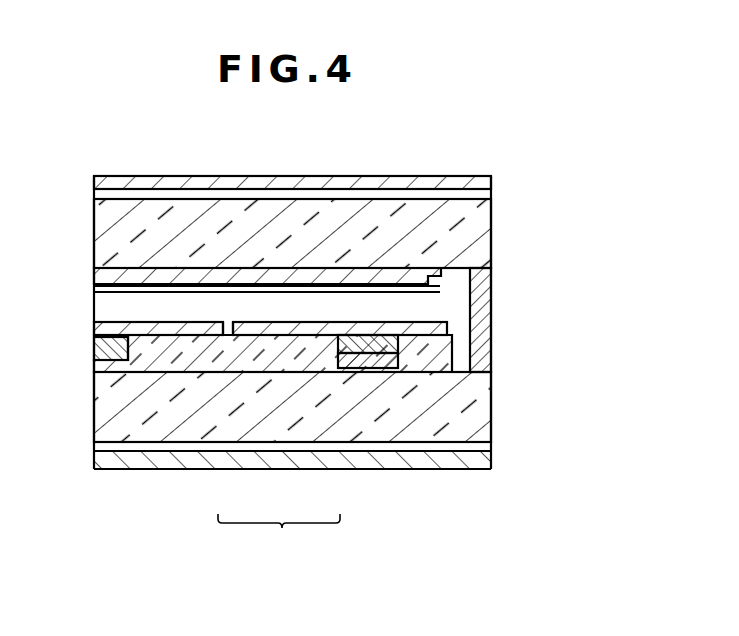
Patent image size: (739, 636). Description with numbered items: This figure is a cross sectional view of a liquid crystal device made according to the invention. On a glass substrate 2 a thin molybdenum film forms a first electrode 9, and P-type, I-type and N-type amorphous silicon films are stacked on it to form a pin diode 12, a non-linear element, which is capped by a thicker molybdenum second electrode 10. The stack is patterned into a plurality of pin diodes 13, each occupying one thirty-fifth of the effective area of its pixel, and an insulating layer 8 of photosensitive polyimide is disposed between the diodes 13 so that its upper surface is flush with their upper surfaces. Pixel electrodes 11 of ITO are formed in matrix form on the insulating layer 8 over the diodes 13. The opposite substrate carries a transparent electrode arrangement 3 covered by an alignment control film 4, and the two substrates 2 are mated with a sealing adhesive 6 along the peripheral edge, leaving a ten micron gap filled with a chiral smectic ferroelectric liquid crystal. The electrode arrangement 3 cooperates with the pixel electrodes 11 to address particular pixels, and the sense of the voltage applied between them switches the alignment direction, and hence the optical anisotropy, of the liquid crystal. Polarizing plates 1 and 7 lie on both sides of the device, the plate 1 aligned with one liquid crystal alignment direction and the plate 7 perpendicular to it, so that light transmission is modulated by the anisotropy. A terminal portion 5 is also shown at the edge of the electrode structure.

The polarizing plate 1 is at (467, 175).
The glass substrate 2 is at (491, 213).
The opposite transparent electrode arrangement 3 is at (428, 276).
The alignment control film 4 is at (112, 290).
The terminal portion 5 is at (94, 334).
The sealing adhesive 6 is at (480, 290).
The polarizing plate 7 is at (457, 462).
The insulating layer 8 is at (150, 335).
The first electrode 9 is at (386, 364).
The second electrode 10 is at (348, 368).
The pixel electrode 11 is at (230, 326).
The pin diode 12 is at (370, 342).
The pin diodes 13 is at (279, 542).